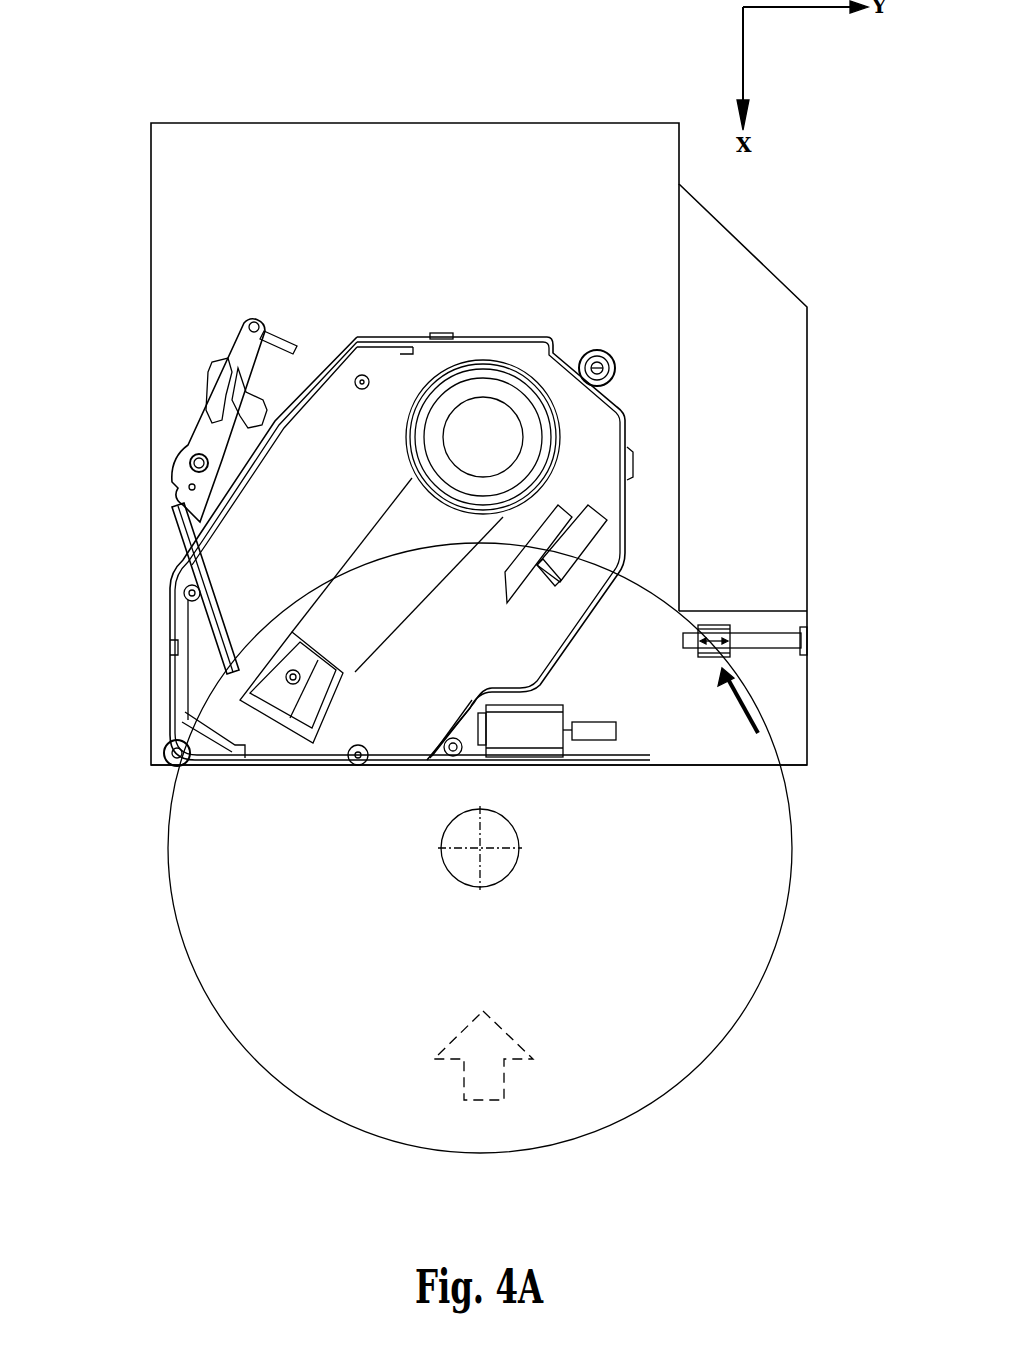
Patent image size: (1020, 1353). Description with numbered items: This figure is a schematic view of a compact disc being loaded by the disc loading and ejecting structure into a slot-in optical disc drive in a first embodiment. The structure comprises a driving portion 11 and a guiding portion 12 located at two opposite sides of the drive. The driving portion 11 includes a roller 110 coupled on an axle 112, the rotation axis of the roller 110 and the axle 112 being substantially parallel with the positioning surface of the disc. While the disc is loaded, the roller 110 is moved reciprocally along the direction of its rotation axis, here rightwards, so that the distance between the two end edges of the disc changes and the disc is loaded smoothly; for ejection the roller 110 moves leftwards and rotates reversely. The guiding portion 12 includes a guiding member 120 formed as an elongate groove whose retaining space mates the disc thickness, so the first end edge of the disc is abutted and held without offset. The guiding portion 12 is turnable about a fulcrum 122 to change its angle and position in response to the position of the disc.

The driving portion 11 is at (786, 656).
The roller 110 is at (717, 627).
The axle 112 is at (762, 635).
The guiding portion 12 is at (185, 418).
The guiding member 120 is at (217, 617).
The fulcrum 122 is at (189, 462).